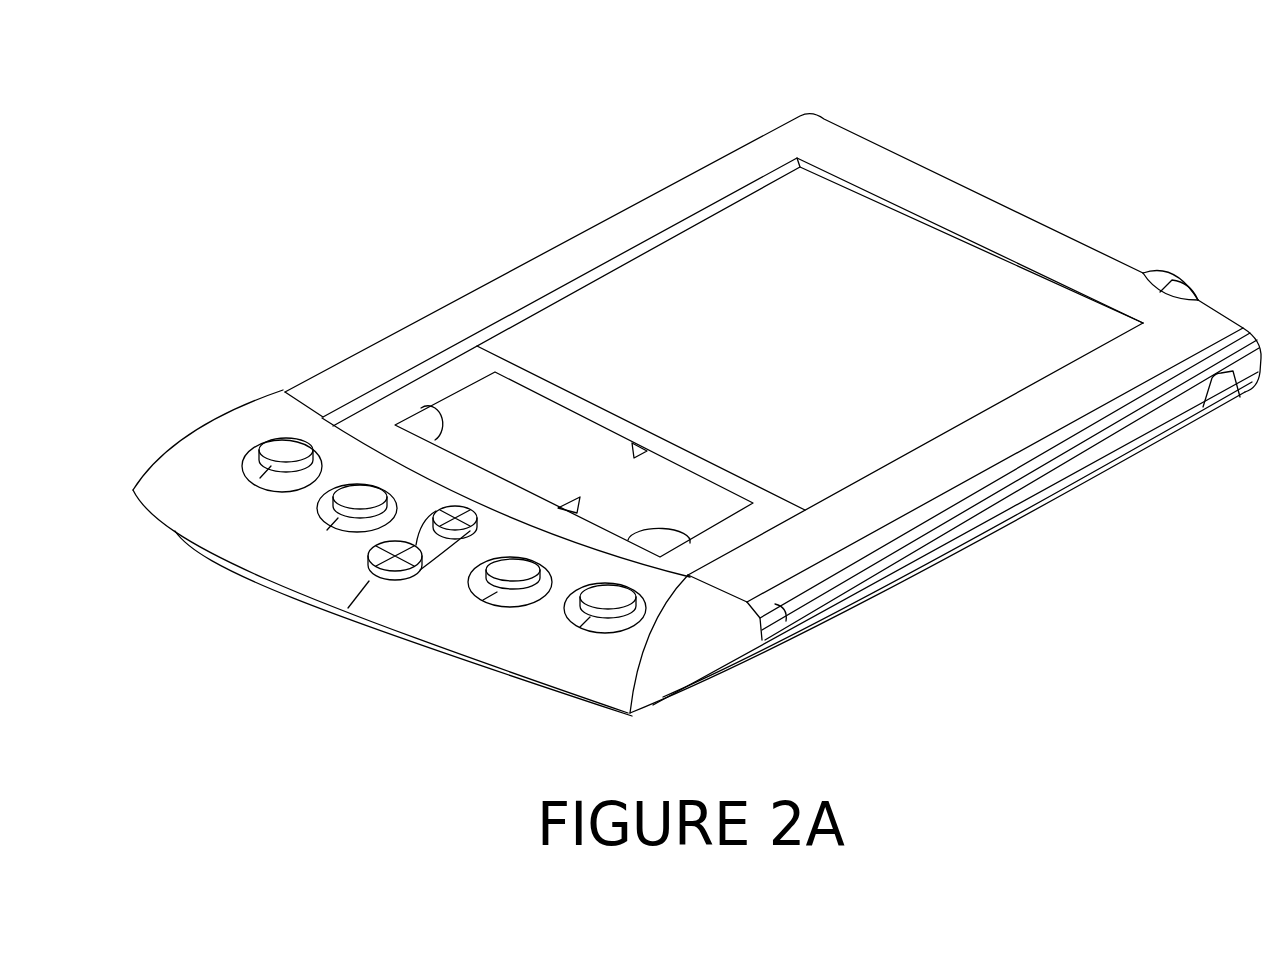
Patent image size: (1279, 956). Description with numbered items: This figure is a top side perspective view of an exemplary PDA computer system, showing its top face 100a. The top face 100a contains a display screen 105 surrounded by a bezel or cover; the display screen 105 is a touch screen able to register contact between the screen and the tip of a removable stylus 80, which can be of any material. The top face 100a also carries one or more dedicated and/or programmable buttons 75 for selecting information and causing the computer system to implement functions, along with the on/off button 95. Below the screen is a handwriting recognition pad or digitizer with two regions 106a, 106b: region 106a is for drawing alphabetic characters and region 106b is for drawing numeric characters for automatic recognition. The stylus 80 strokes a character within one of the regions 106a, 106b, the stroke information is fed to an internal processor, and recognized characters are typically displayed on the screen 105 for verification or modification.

The top face 100a is at (215, 68).
The display screen 105 is at (803, 265).
The region for alphabetic characters 106a is at (528, 445).
The region for numeric characters 106b is at (682, 515).
The buttons 75 is at (287, 447).
The stylus 80 is at (965, 507).
The on/off button 95 is at (1167, 278).